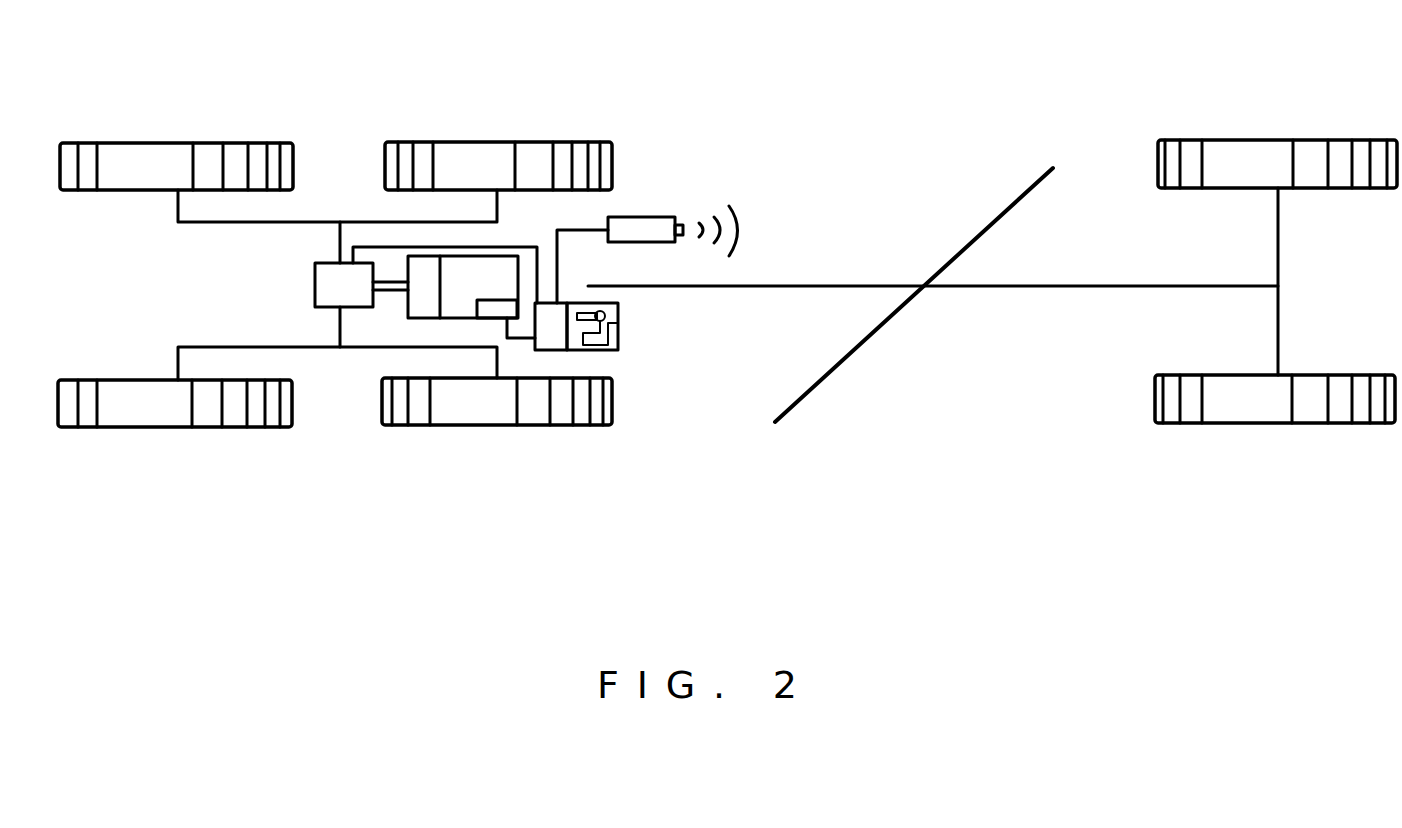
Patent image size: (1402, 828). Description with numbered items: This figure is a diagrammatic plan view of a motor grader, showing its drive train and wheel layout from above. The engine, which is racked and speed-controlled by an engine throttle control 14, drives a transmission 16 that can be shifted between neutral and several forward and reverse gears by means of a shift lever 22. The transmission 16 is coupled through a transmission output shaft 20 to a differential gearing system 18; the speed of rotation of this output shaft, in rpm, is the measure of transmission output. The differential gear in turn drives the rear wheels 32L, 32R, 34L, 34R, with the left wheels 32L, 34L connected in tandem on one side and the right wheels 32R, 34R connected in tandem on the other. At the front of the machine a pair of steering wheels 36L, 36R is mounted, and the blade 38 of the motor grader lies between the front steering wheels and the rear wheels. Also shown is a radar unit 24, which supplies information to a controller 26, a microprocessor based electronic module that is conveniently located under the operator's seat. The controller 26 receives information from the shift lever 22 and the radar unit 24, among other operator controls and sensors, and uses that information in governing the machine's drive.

The engine throttle control 14 is at (488, 328).
The transmission 16 is at (418, 270).
The differential gearing system 18 is at (323, 283).
The transmission output shaft 20 is at (384, 288).
The shift lever 22 is at (612, 348).
The radar unit 24 is at (643, 227).
The controller 26 is at (558, 337).
The left rear wheel 32L is at (483, 153).
The right rear wheel 32R is at (560, 418).
The left rear wheel 34L is at (142, 153).
The right rear wheel 34R is at (180, 420).
The left steering wheel 36L is at (1308, 148).
The right steering wheel 36R is at (1342, 412).
The blade 38 is at (867, 340).